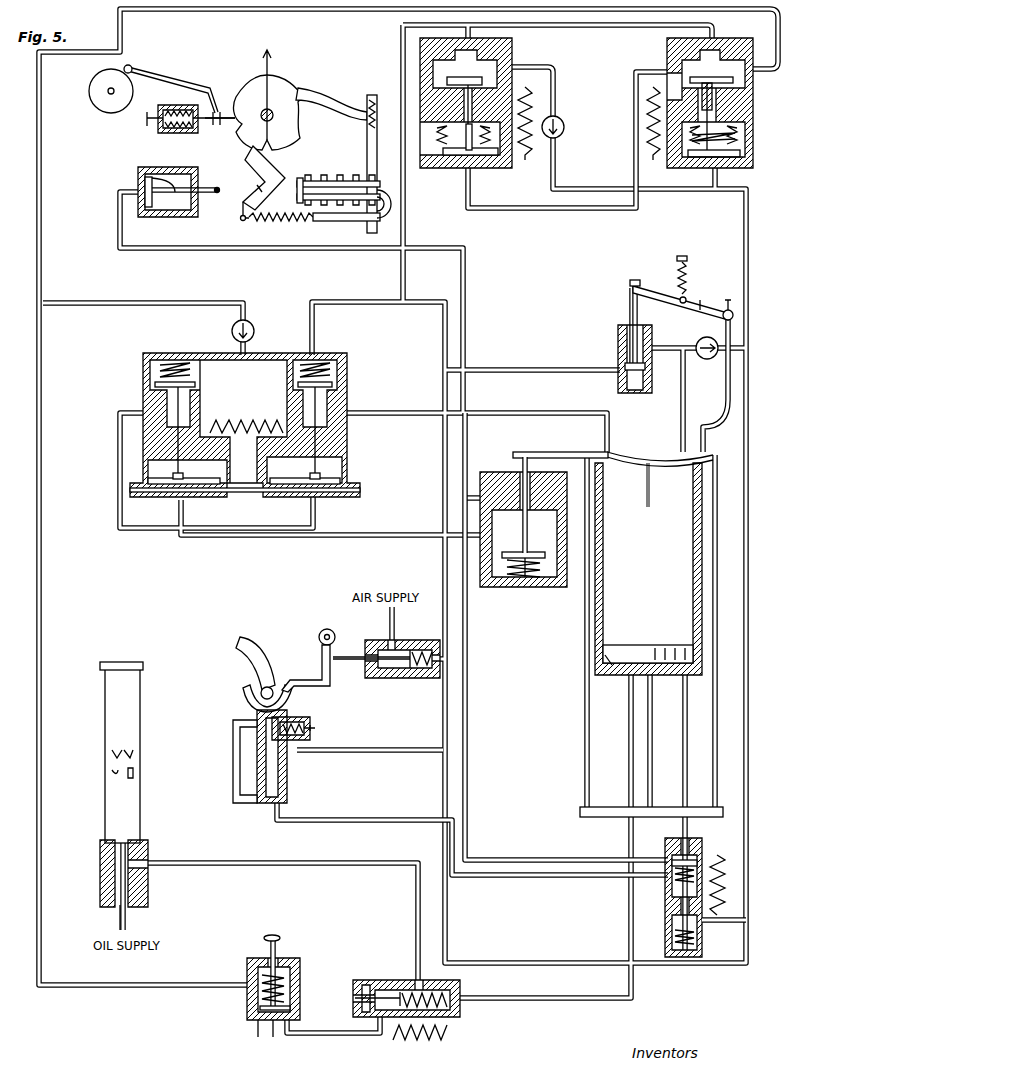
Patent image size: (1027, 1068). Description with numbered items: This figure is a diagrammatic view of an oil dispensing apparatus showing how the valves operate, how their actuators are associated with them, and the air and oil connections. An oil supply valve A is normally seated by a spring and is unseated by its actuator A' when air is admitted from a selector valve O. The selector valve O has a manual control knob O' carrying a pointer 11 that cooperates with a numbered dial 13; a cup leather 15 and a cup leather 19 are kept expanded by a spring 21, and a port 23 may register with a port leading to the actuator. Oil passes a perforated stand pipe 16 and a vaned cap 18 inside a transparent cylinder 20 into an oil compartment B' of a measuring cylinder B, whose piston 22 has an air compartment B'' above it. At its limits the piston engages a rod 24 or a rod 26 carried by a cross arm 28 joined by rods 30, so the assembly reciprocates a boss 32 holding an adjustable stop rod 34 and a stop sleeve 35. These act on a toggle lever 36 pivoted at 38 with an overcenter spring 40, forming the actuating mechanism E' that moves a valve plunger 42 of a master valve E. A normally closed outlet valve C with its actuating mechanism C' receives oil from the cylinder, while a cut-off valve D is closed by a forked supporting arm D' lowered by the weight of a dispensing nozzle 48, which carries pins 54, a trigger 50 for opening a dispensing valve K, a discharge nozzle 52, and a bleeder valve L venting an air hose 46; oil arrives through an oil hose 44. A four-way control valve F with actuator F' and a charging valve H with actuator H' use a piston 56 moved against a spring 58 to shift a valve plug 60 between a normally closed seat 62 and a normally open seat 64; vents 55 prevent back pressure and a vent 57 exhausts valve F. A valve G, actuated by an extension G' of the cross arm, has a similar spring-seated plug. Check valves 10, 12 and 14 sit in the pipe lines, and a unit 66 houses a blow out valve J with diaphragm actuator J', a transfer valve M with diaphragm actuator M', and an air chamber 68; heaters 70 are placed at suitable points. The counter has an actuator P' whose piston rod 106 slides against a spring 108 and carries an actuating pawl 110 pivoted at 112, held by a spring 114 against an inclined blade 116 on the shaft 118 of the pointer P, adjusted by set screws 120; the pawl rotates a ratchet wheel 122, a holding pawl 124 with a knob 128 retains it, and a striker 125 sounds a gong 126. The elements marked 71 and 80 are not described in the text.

The check valve 10 is at (255, 331).
The check valve 12 is at (705, 360).
The check valve 14 is at (564, 128).
The stand pipe 16 is at (127, 827).
The cap 18 is at (136, 775).
The transparent cylinder 20 is at (141, 749).
The piston 22 is at (648, 645).
The rod 24 is at (652, 703).
The rod 26 is at (650, 507).
The cross arm 28 is at (651, 824).
The rods 30 is at (590, 788).
The boss 32 is at (727, 396).
The stop rod 34 is at (718, 306).
The stop sleeve 35 is at (732, 324).
The toggle lever 36 is at (668, 298).
The pivot 38 is at (684, 304).
The overcenter spring 40 is at (688, 273).
The valve plunger 42 is at (630, 318).
The oil hose 44 is at (562, 866).
The air hose 46 is at (404, 752).
The dispensing nozzle 48 is at (285, 797).
The dispensing trigger 50 is at (238, 777).
The discharge nozzle 52 is at (250, 657).
The pins 54 is at (250, 705).
The vents 55 is at (425, 150).
The piston 56 is at (450, 158).
The vent 57 is at (714, 100).
The spring 58 is at (462, 157).
The valve plug 60 is at (626, 319).
The normally closed seat 62 is at (617, 309).
The normally open seat 64 is at (737, 30).
The unit 66 is at (143, 373).
The air chamber 68 is at (354, 229).
The heaters 70 is at (477, 573).
The plate 71 is at (290, 500).
The pipe 80 is at (128, 915).
The piston rod 106 is at (248, 190).
The spring 108 is at (332, 181).
The actuating pawl 110 is at (243, 222).
The pivot 112 is at (221, 196).
The spring 114 is at (282, 222).
The inclined blade 116 is at (250, 157).
The shaft 118 is at (273, 116).
The set screws 120 is at (378, 118).
The ratchet wheel 122 is at (316, 98).
The holding pawl 124 is at (224, 106).
The striker 125 is at (160, 74).
The gong 126 is at (127, 95).
The knob 128 is at (147, 120).
The pointer 11 is at (309, 951).
The numbered dial 13 is at (268, 950).
The cup leather 15 is at (250, 1011).
The cup leather 19 is at (250, 968).
The spring 21 is at (285, 975).
The port 23 is at (290, 1009).
The oil supply valve A is at (406, 988).
The actuator A' is at (389, 970).
The measuring and dispensing cylinder B is at (648, 569).
The oil compartment B' is at (617, 642).
The air compartment B'' is at (660, 546).
The outlet valve C is at (675, 897).
The actuating mechanism C' is at (697, 928).
The cut-off valve D is at (386, 668).
The supporting arm D' is at (312, 663).
The master valve E is at (642, 359).
The actuating mechanism E' is at (676, 289).
The selector and charging control valve F is at (721, 103).
The actuator F' is at (736, 135).
The blow out and exhaust valve G is at (523, 534).
The extension G' is at (560, 444).
The charging valve H is at (479, 103).
The actuator H' is at (487, 159).
The blow out valve J is at (328, 420).
The actuator J' is at (309, 497).
The oil dispensing valve K is at (285, 760).
The bleeder valve L is at (316, 730).
The transfer valve M is at (188, 420).
The actuator M' is at (188, 496).
The selector valve O is at (280, 987).
The actuator O' is at (285, 939).
The pointer P is at (278, 95).
The actuator P' is at (168, 203).